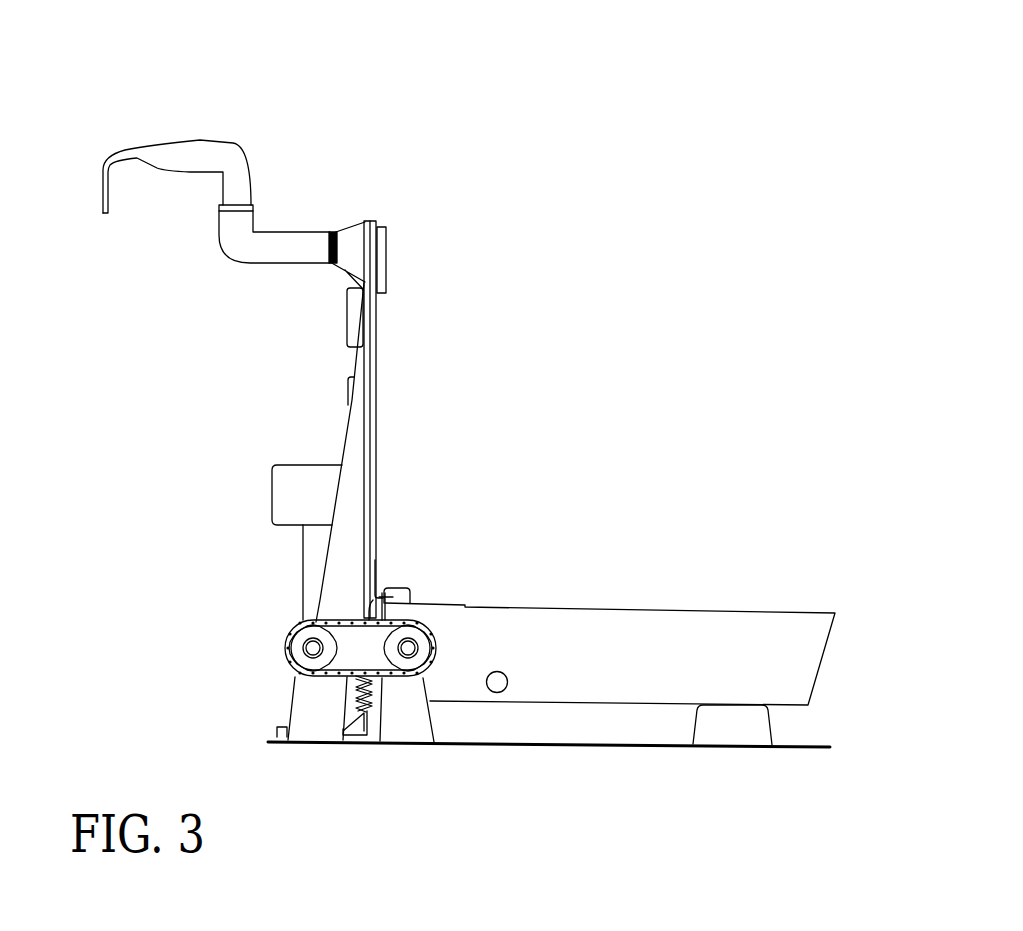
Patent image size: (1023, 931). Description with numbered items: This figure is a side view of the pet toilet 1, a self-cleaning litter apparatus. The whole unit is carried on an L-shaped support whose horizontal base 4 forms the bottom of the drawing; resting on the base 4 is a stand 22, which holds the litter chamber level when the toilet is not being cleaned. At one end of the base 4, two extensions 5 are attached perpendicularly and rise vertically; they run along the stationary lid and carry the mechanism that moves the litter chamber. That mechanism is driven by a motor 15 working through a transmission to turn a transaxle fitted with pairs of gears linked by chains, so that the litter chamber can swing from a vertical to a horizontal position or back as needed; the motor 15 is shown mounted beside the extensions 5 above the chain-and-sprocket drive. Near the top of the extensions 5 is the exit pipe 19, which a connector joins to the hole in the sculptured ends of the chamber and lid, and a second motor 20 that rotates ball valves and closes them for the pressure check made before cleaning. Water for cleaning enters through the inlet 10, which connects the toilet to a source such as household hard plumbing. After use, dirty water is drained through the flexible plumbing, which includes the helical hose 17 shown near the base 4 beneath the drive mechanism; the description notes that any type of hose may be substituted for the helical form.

The pet toilet 1 is at (598, 235).
The base 4 is at (600, 750).
The extensions 5 is at (352, 433).
The inlet 10 is at (282, 727).
The motor 15 is at (275, 465).
The helical hose 17 is at (350, 710).
The exit pipe 19 is at (203, 142).
The motor 20 is at (348, 325).
The stand 22 is at (768, 727).